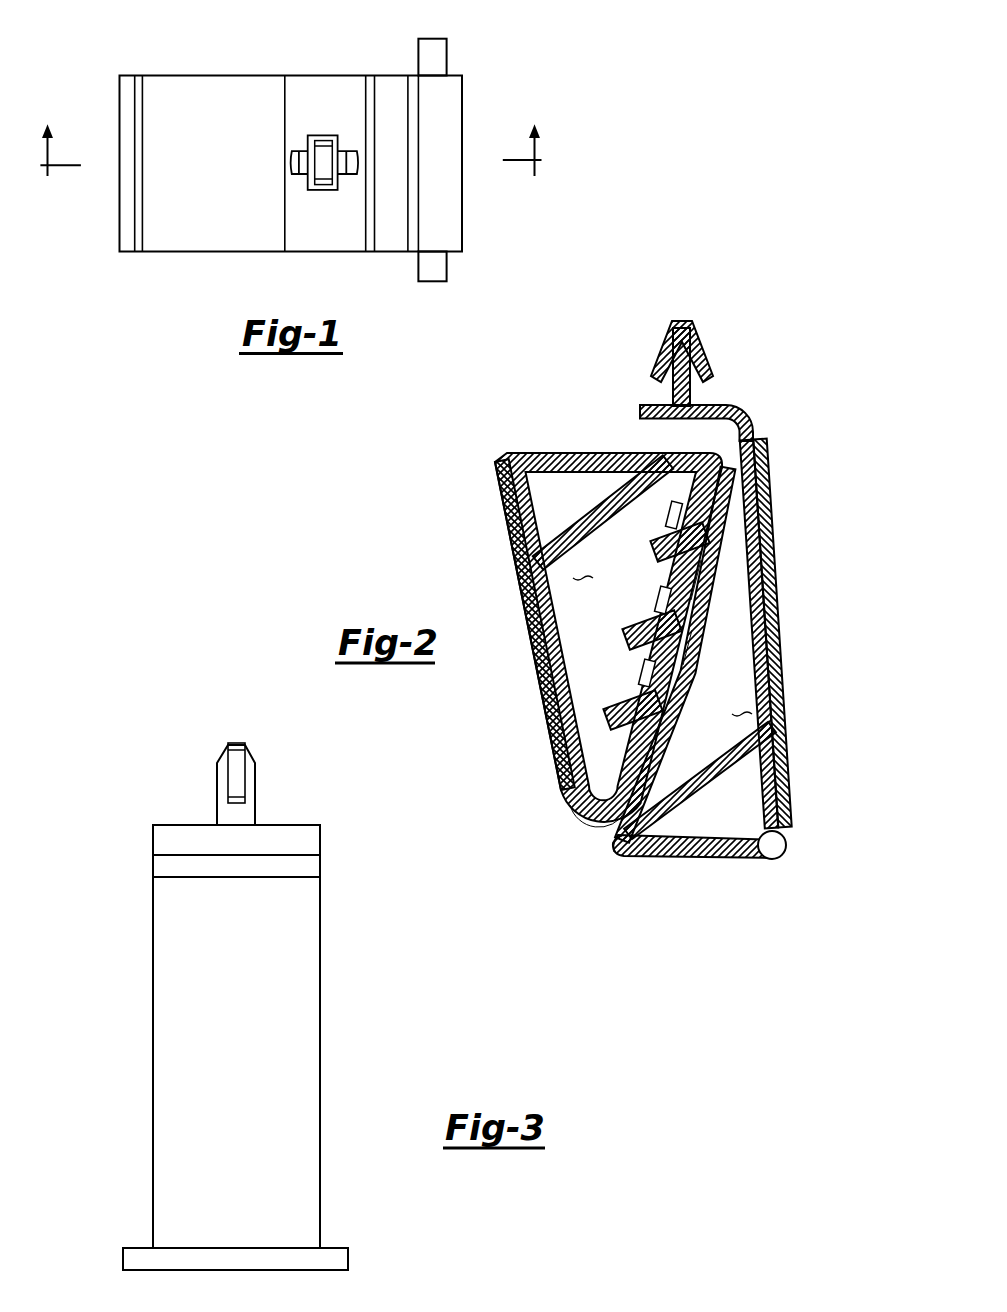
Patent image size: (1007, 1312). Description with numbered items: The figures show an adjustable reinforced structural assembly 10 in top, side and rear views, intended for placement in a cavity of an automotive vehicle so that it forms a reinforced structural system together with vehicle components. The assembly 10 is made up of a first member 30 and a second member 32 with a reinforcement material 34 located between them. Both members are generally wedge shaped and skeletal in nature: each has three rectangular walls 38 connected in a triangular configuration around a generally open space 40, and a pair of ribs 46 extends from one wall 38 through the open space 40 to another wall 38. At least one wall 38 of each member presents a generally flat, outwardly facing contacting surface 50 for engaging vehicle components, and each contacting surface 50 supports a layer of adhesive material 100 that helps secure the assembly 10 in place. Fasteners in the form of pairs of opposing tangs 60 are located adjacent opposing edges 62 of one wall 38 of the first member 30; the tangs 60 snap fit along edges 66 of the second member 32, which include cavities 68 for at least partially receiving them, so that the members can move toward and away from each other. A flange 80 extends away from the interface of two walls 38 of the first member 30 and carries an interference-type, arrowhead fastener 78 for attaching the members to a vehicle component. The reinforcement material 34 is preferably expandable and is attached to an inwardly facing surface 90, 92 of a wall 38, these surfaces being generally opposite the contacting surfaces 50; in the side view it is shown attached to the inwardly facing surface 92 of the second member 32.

In FIG. 1, the adjustable reinforced structural assembly 10 is at (493, 62).
In FIG. 2, the adjustable reinforced structural assembly 10 is at (806, 384).
In FIG. 3, the adjustable reinforced structural assembly 10 is at (326, 772).
In FIG. 1, the first member 30 is at (459, 239).
In FIG. 2, the first member 30 is at (788, 833).
In FIG. 3, the first member 30 is at (312, 1220).
In FIG. 1, the second member 32 is at (172, 239).
In FIG. 2, the second member 32 is at (523, 453).
In FIG. 2, the reinforcement material 34 is at (728, 466).
In FIG. 2, the rectangular walls 38 is at (555, 453).
In FIG. 2, the open space 40 is at (663, 636).
In FIG. 2, the ribs 46 is at (557, 530).
In FIG. 1, the outwardly facing contacting surface 50 is at (102, 211).
In FIG. 2, the outwardly facing contacting surface 50 is at (494, 524).
In FIG. 2, the tangs 60 is at (656, 535).
In FIG. 2, the opposing edges 62 is at (633, 850).
In FIG. 2, the edges 66 is at (583, 825).
In FIG. 2, the cavities 68 is at (674, 520).
In FIG. 1, the interference-type fastener 78 is at (320, 139).
In FIG. 2, the interference-type fastener 78 is at (740, 320).
In FIG. 3, the interference-type fastener 78 is at (233, 755).
In FIG. 1, the flange 80 is at (302, 81).
In FIG. 2, the flange 80 is at (640, 410).
In FIG. 2, the inwardly facing surface 90 is at (713, 607).
In FIG. 2, the inwardly facing surface 92 is at (686, 670).
In FIG. 2, the adhesive material 100 is at (775, 512).
In FIG. 3, the adhesive material 100 is at (222, 1084).